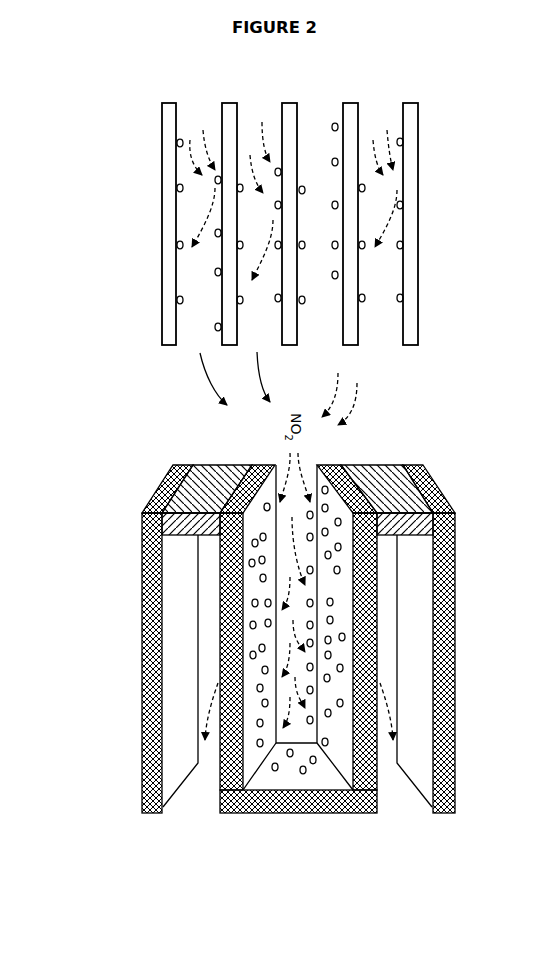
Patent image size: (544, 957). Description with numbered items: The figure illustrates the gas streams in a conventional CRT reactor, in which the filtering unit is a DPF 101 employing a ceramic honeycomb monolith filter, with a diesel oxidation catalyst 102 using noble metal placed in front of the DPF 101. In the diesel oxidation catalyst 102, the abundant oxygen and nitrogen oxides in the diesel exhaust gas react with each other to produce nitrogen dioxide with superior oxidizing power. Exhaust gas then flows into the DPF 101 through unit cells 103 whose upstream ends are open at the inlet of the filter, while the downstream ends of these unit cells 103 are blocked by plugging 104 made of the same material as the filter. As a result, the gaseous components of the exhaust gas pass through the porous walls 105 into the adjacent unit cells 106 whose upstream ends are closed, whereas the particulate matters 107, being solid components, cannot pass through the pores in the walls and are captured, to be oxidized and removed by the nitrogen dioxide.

The DPF 101 is at (123, 653).
The diesel oxidation catalyst 102 is at (142, 218).
The unit cells with open upstream ends 103 is at (312, 583).
The plugging 104 is at (165, 473).
The porous walls 105 is at (220, 605).
The unit cells with closed upstream ends 106 is at (202, 567).
The particulate matters 107 is at (267, 505).